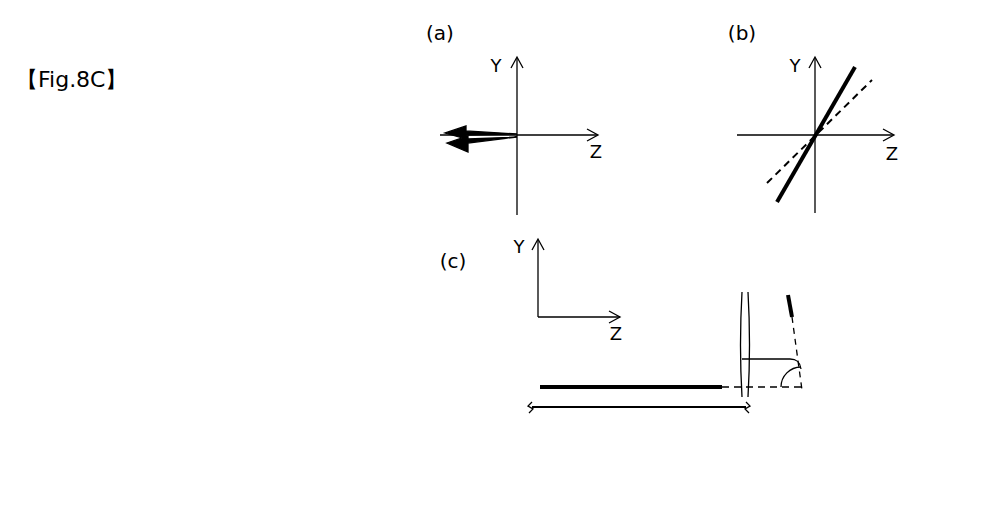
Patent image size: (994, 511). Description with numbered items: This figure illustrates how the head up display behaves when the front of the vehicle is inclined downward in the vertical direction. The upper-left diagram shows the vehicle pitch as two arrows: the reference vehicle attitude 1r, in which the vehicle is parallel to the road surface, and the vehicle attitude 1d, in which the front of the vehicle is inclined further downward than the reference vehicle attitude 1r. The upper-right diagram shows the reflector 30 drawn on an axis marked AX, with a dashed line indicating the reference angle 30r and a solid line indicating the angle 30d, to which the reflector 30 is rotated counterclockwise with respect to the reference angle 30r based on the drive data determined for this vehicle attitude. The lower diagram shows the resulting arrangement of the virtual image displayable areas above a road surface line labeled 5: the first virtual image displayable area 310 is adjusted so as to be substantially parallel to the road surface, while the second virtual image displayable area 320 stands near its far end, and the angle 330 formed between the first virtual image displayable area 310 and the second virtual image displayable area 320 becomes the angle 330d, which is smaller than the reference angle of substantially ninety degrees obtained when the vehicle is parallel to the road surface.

The reference vehicle attitude 1r is at (466, 128).
The vehicle attitude 1d is at (458, 148).
The reflector 30 is at (819, 131).
The angle of the reflector 30d is at (853, 70).
The reference angle 30r is at (803, 126).
The optical axis AX is at (817, 138).
The substrate 5 is at (532, 403).
The first virtual image displayable area 310 is at (593, 385).
The angle 330 is at (711, 344).
The angle 330d is at (740, 357).
The second virtual image displayable area 320 is at (791, 296).